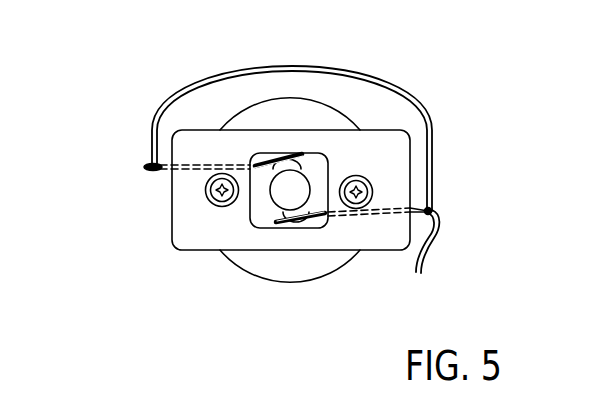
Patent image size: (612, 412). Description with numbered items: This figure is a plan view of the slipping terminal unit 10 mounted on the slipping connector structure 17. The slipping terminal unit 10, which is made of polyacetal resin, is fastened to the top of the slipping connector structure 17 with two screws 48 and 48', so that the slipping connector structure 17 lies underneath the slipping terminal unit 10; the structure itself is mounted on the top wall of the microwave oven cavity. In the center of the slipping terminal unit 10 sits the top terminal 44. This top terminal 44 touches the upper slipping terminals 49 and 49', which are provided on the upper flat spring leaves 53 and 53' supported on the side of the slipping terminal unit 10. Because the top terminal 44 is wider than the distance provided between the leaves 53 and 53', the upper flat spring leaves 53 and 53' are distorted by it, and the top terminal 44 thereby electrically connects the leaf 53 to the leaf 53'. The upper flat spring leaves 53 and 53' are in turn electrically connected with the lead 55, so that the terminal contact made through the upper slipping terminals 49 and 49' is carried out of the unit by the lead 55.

The slipping terminal unit 10 is at (195, 138).
The slipping connector structure 17 is at (282, 98).
The top terminal 44 is at (303, 192).
The screw 48 is at (188, 250).
The screw 48' is at (407, 129).
The upper slipping terminal 49 is at (255, 240).
The upper slipping terminal 49' is at (300, 269).
The upper flat spring leaf 53 is at (265, 99).
The upper flat spring leaf 53' is at (326, 269).
The lead 55 is at (148, 162).